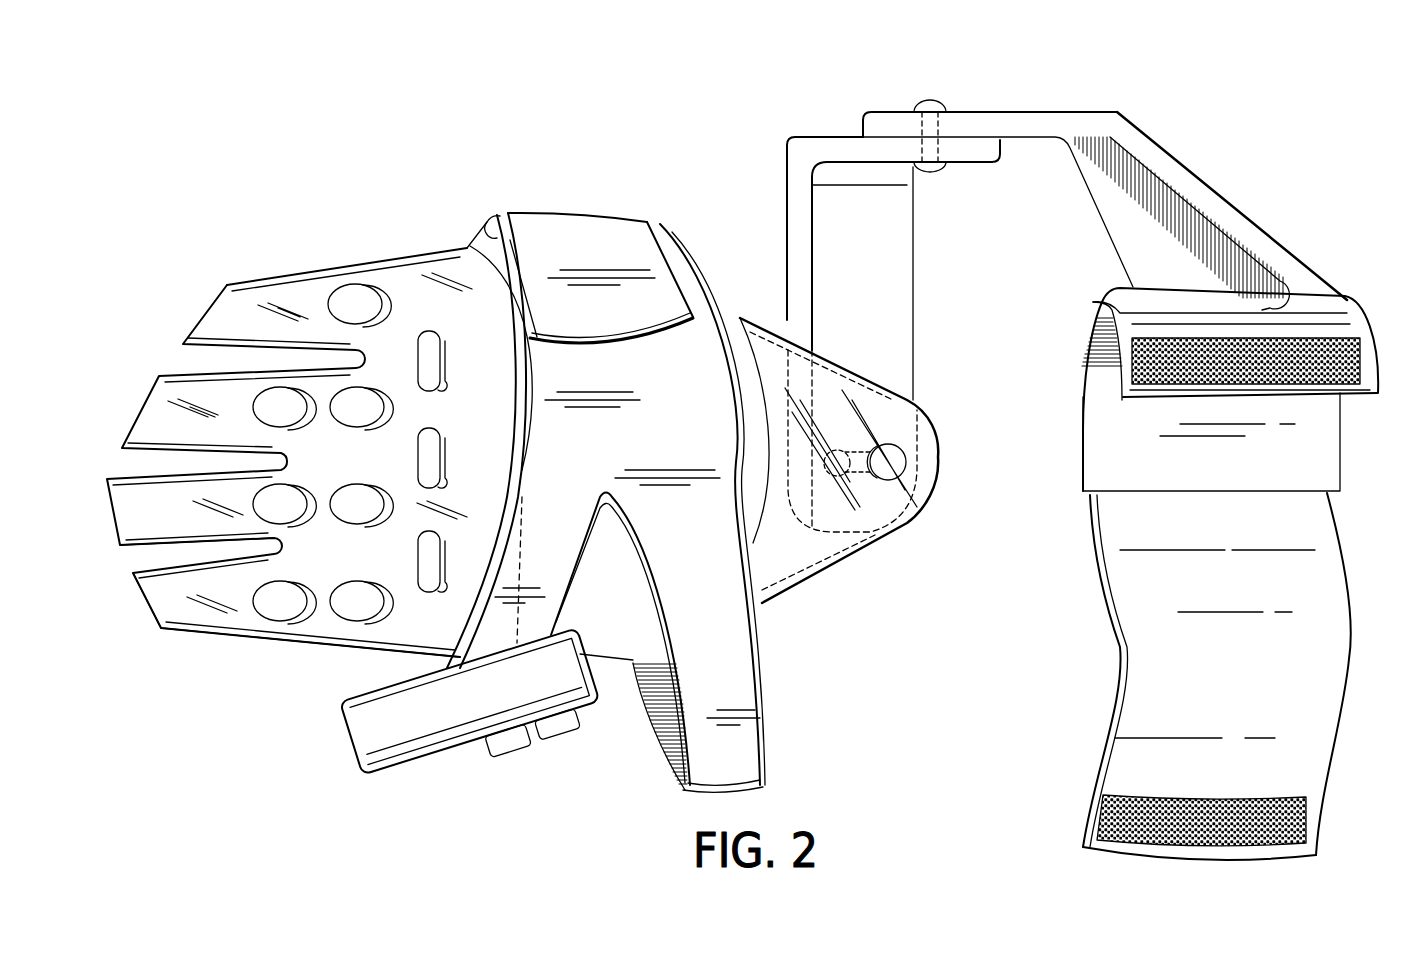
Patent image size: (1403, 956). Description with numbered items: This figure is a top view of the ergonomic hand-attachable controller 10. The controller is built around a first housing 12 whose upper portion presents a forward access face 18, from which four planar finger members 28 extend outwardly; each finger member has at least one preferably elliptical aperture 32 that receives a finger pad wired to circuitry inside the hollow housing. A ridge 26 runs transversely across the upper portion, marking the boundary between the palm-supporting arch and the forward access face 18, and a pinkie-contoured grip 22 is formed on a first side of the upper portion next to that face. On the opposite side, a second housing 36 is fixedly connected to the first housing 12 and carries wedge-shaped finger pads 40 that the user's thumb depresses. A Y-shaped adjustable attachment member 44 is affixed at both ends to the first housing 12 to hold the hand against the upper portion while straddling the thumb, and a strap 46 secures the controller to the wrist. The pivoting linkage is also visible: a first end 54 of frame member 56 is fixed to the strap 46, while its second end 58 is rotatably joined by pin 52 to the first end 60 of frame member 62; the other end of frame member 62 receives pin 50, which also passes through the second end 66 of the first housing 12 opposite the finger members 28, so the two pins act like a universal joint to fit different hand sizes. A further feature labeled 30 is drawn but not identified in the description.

The ergonomic hand-attachable controller 10 is at (624, 110).
The first housing 12 is at (318, 436).
The forward access face 18 is at (300, 652).
The grip 22 is at (470, 243).
The ridge 26 is at (490, 220).
The planar finger members 28 is at (142, 607).
The slot between finger tabs 30 is at (133, 560).
The aperture 32 is at (308, 583).
The second housing 36 is at (458, 749).
The finger pad 40 is at (510, 757).
The adjustable attachment member 44 is at (613, 223).
The strap 46 is at (1347, 641).
The pin 50 is at (906, 462).
The pin 52 is at (935, 100).
The first end of frame member 56 54 is at (1320, 278).
The frame member 56 is at (1218, 172).
The second end of frame member 56 58 is at (887, 112).
The first end of frame member 62 60 is at (977, 160).
The frame member 62 is at (928, 294).
The second end of first housing 66 is at (866, 460).